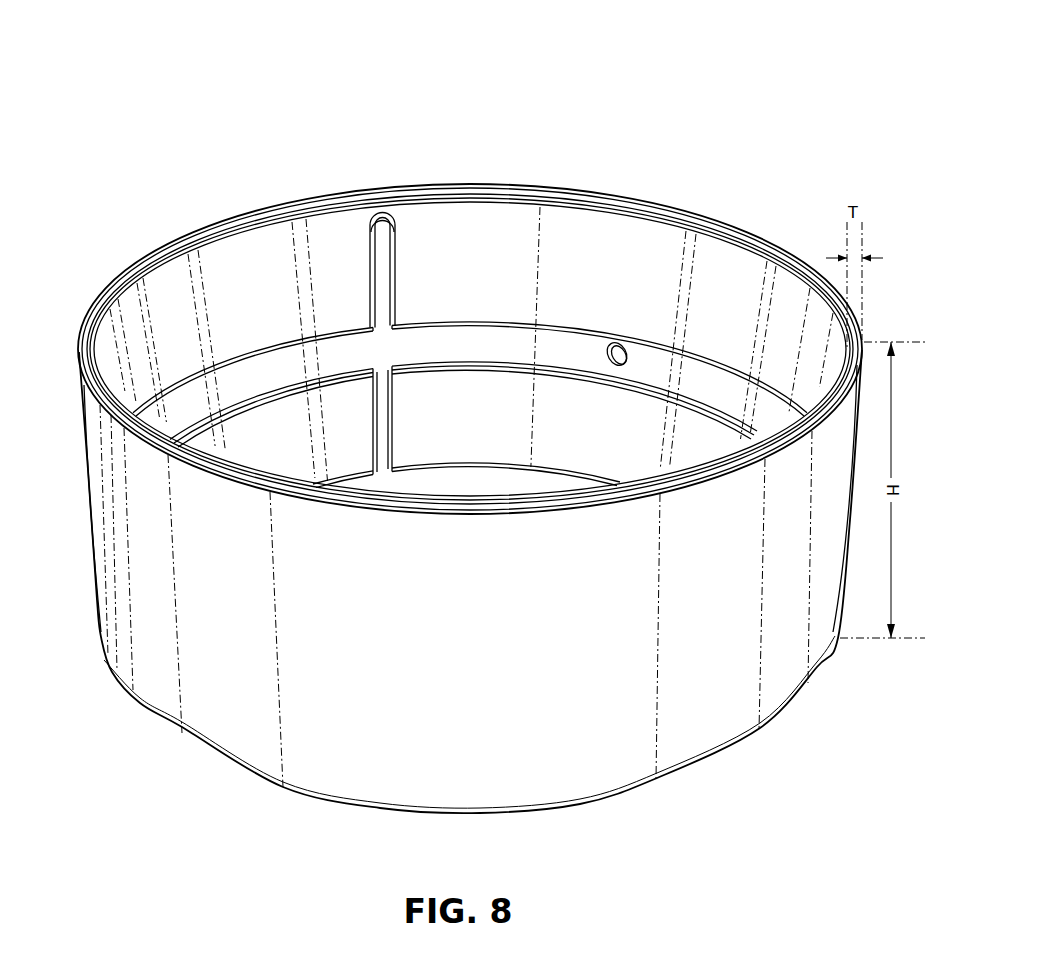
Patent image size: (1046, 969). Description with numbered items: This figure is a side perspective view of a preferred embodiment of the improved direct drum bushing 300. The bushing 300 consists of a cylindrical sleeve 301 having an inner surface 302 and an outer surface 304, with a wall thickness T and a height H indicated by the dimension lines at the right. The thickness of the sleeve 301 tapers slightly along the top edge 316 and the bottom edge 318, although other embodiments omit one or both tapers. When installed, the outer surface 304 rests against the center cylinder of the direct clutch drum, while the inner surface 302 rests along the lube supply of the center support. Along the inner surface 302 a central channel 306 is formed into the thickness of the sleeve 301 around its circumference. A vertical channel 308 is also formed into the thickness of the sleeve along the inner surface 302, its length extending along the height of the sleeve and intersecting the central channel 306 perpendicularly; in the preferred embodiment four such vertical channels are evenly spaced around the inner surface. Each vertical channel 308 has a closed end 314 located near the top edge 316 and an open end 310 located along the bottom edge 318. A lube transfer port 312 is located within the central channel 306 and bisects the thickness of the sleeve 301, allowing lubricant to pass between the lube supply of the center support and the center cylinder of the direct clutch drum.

The bushing 300 is at (222, 87).
The cylindrical sleeve 301 is at (93, 528).
The inner surface 302 is at (622, 273).
The outer surface 304 is at (337, 762).
The central channel 306 is at (186, 416).
The vertical channel 308 is at (392, 288).
The open end 310 is at (383, 462).
The lube transfer port 312 is at (628, 357).
The closed end 314 is at (388, 212).
The top edge 316 is at (795, 248).
The bottom edge 318 is at (685, 781).